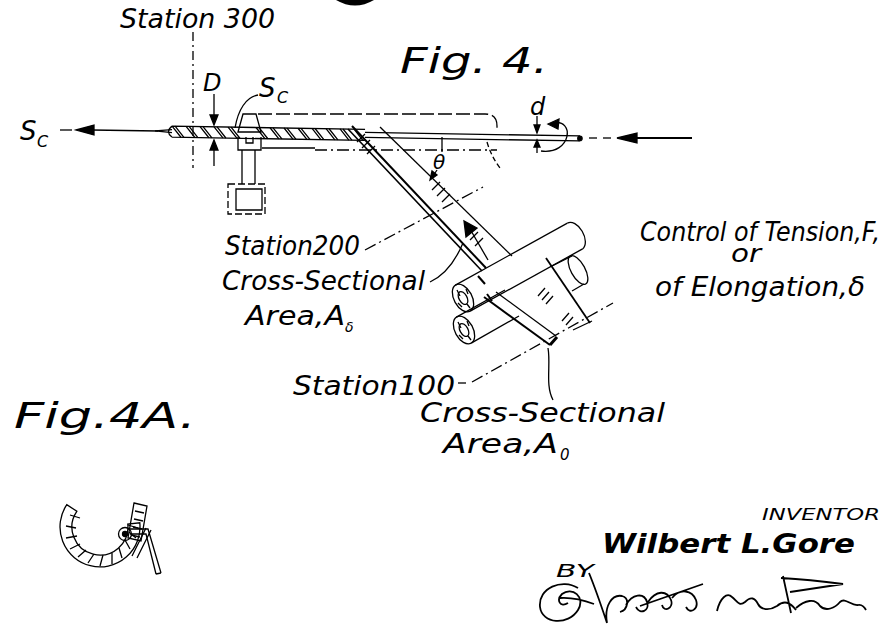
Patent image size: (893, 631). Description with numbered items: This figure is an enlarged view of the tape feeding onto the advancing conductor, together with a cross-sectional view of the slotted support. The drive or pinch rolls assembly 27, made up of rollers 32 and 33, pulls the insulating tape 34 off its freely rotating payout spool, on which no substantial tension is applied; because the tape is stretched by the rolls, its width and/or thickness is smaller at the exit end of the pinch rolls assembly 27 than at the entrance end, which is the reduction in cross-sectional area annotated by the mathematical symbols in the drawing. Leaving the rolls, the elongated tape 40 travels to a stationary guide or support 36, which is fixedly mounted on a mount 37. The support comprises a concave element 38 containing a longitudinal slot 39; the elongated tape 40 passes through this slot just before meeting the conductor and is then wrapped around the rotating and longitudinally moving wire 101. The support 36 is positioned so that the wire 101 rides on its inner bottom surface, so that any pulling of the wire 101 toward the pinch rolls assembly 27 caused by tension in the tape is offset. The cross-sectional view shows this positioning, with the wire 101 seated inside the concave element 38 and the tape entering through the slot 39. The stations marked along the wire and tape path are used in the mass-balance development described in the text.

In FIG. 4, the wire 101 is at (581, 140).
In FIG. 4A, the wire 101 is at (118, 527).
In FIG. 4, the pinch rolls assembly 27 is at (438, 325).
In FIG. 4, the roller 32 is at (577, 234).
In FIG. 4, the roller 33 is at (584, 272).
In FIG. 4, the insulating tape 34 is at (597, 334).
In FIG. 4, the stationary guide or support 36 is at (335, 156).
In FIG. 4, the mount 37 is at (240, 201).
In FIG. 4, the concave element 38 is at (397, 150).
In FIG. 4A, the concave element 38 is at (144, 511).
In FIG. 4, the longitudinal slot 39 is at (310, 145).
In FIG. 4A, the longitudinal slot 39 is at (134, 558).
In FIG. 4, the elongated tape 40 is at (403, 174).
In FIG. 4A, the elongated tape 40 is at (162, 554).